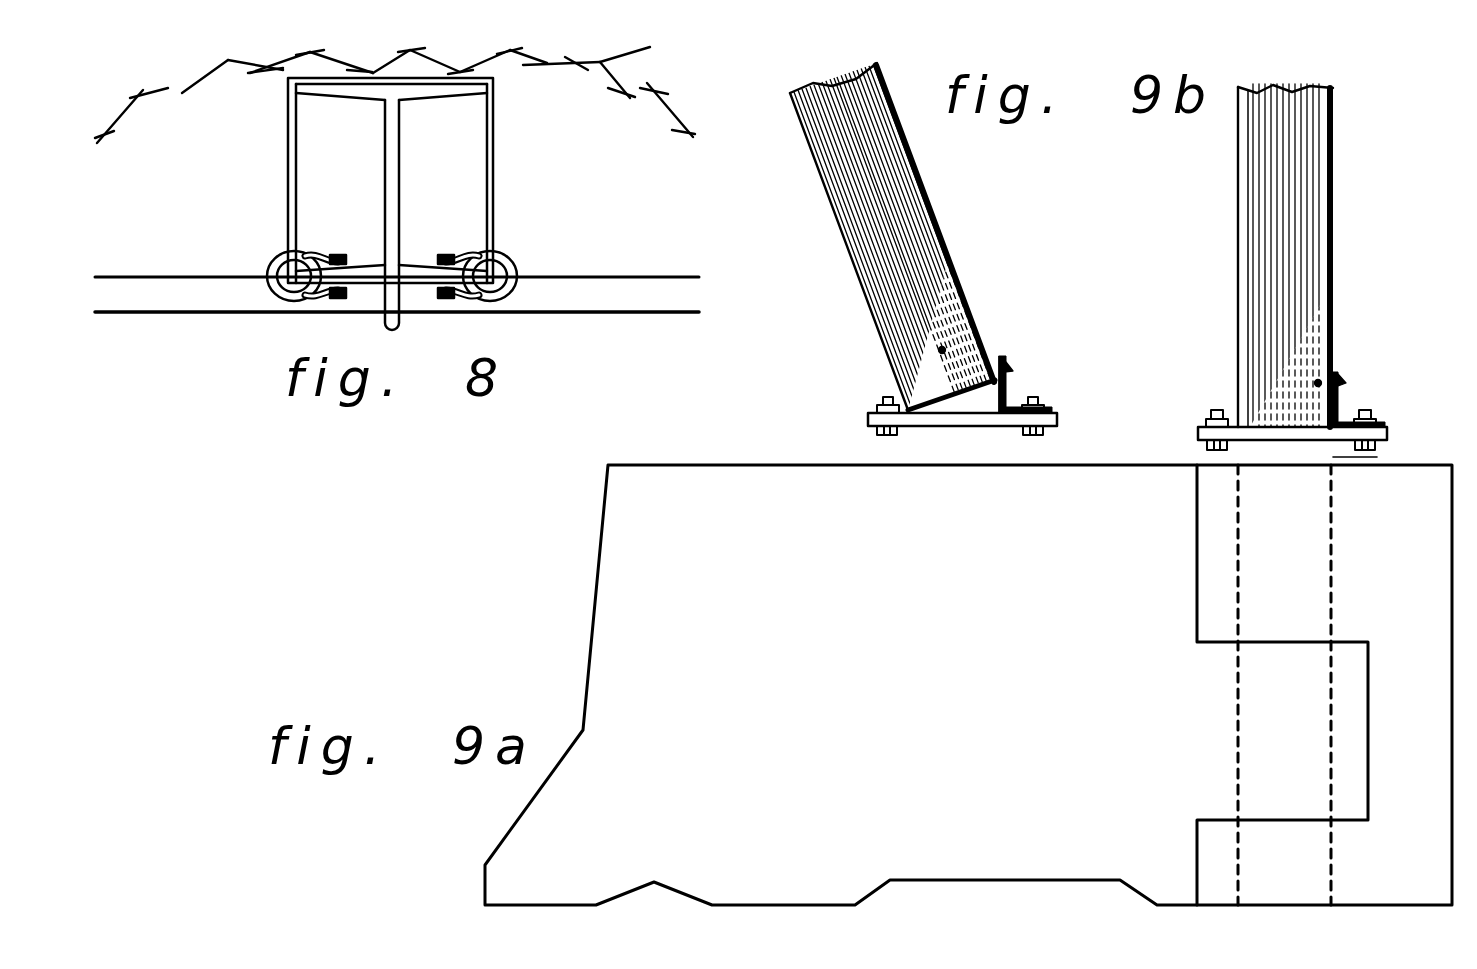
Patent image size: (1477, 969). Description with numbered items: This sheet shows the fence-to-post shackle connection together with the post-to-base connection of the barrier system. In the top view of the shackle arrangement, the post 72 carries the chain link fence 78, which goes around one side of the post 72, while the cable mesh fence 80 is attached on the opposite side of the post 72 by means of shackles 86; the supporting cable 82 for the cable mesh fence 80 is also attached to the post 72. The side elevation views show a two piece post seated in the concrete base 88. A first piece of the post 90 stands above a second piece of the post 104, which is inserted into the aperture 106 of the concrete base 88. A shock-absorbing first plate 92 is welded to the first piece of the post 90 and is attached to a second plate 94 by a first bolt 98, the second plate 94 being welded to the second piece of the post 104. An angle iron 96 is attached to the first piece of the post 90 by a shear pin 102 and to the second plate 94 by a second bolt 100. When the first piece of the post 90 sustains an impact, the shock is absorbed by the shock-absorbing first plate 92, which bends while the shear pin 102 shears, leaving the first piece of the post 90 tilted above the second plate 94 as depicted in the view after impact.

In FIG. 8, the post 72 is at (401, 172).
In FIG. 8, the chain link fence 78 is at (660, 48).
In FIG. 8, the cable mesh fence 80 is at (646, 276).
In FIG. 8, the supporting cable 82 is at (605, 314).
In FIG. 8, the shackles 86 is at (267, 256).
In FIG. 9A, the concrete base 88 is at (1382, 613).
In FIG. 9A, the first piece of the post 90 is at (807, 152).
In FIG. 9B, the first piece of the post 90 is at (1331, 233).
In FIG. 9A, the shock-absorbing first plate 92 is at (873, 408).
In FIG. 9B, the shock-absorbing first plate 92 is at (1200, 427).
In FIG. 9A, the second plate 94 is at (868, 420).
In FIG. 9B, the second plate 94 is at (1198, 433).
In FIG. 9A, the angle iron 96 is at (1012, 385).
In FIG. 9B, the angle iron 96 is at (1340, 397).
In FIG. 9A, the first bolt 98 is at (887, 396).
In FIG. 9B, the first bolt 98 is at (1217, 408).
In FIG. 9A, the second bolt 100 is at (1044, 398).
In FIG. 9B, the second bolt 100 is at (1368, 412).
In FIG. 9A, the shear pin 102 is at (943, 349).
In FIG. 9B, the shear pin 102 is at (1345, 380).
In FIG. 9B, the second piece of the post 104 is at (1373, 457).
In FIG. 9B, the aperture 106 is at (1330, 548).